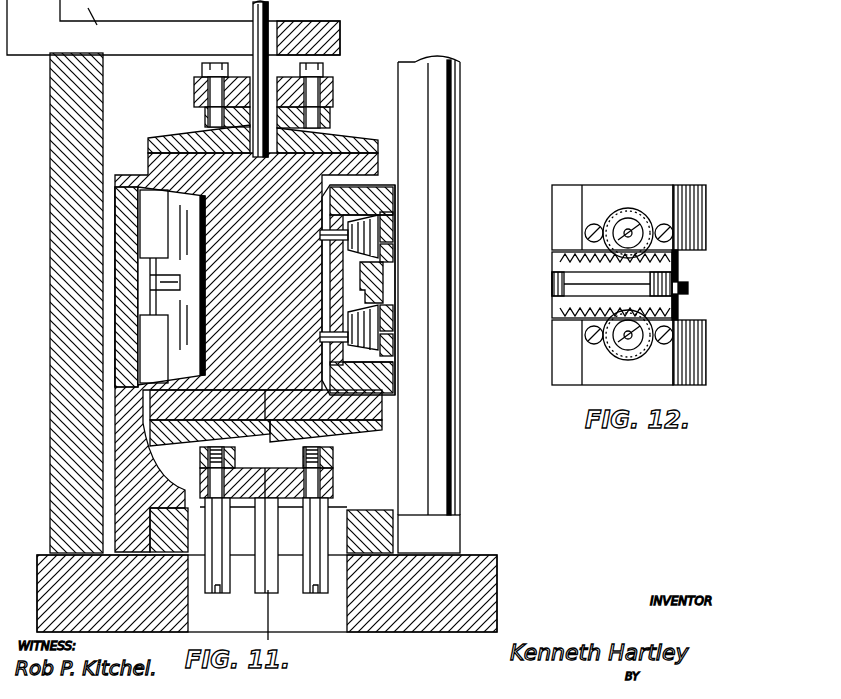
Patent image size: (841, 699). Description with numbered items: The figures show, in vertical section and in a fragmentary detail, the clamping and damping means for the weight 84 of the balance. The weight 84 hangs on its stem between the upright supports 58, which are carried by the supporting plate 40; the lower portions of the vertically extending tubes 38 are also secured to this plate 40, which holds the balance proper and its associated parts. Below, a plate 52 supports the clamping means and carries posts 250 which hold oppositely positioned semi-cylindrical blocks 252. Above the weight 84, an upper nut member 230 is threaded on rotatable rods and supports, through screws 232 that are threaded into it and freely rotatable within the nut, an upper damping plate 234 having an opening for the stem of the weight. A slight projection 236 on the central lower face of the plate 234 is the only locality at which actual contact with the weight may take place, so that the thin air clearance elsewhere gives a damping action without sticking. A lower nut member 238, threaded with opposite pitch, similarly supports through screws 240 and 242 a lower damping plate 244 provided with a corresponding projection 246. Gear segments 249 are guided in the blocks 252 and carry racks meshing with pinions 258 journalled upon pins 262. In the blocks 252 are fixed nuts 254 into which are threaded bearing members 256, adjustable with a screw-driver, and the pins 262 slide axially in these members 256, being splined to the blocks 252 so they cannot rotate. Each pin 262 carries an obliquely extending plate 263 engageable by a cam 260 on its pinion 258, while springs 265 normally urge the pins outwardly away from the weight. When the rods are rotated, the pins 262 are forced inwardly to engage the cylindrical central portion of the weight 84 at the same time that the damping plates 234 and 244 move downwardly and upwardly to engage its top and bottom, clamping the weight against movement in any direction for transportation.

In FIG. 11, the upright support 58 is at (50, 92).
In FIG. 11, the supporting plate 40 is at (497, 585).
In FIG. 11, the post 250 is at (198, 352).
In FIG. 11, the weight 84 is at (156, 176).
In FIG. 11, the upper nut member 230 is at (202, 80).
In FIG. 11, the screw 232 is at (194, 95).
In FIG. 11, the projection 236 is at (232, 132).
In FIG. 11, the upper damping plate 234 is at (327, 137).
In FIG. 11, the cam 260 is at (383, 200).
In FIG. 11, the spring 265 is at (356, 162).
In FIG. 11, the obliquely extending plate 263 is at (340, 345).
In FIG. 11, the pin 262 is at (345, 228).
In FIG. 11, the nut 254 is at (395, 262).
In FIG. 12, the nut 254 is at (612, 212).
In FIG. 11, the pinion 258 is at (393, 222).
In FIG. 12, the pinion 258 is at (640, 268).
In FIG. 11, the bearing member 256 is at (393, 250).
In FIG. 12, the bearing member 256 is at (632, 226).
In FIG. 11, the gear segment 249 is at (383, 283).
In FIG. 12, the gear segment 249 is at (552, 283).
In FIG. 11, the vertically extending tube 38 is at (462, 440).
In FIG. 11, the semi-cylindrical block 252 is at (452, 180).
In FIG. 12, the semi-cylindrical block 252 is at (706, 216).
In FIG. 11, the projection 246 is at (215, 440).
In FIG. 11, the lower damping plate 244 is at (335, 438).
In FIG. 11, the lower nut member 238 is at (333, 480).
In FIG. 11, the screw 242 is at (222, 578).
In FIG. 11, the screw 240 is at (300, 575).
In FIG. 11, the plate 52 is at (366, 512).